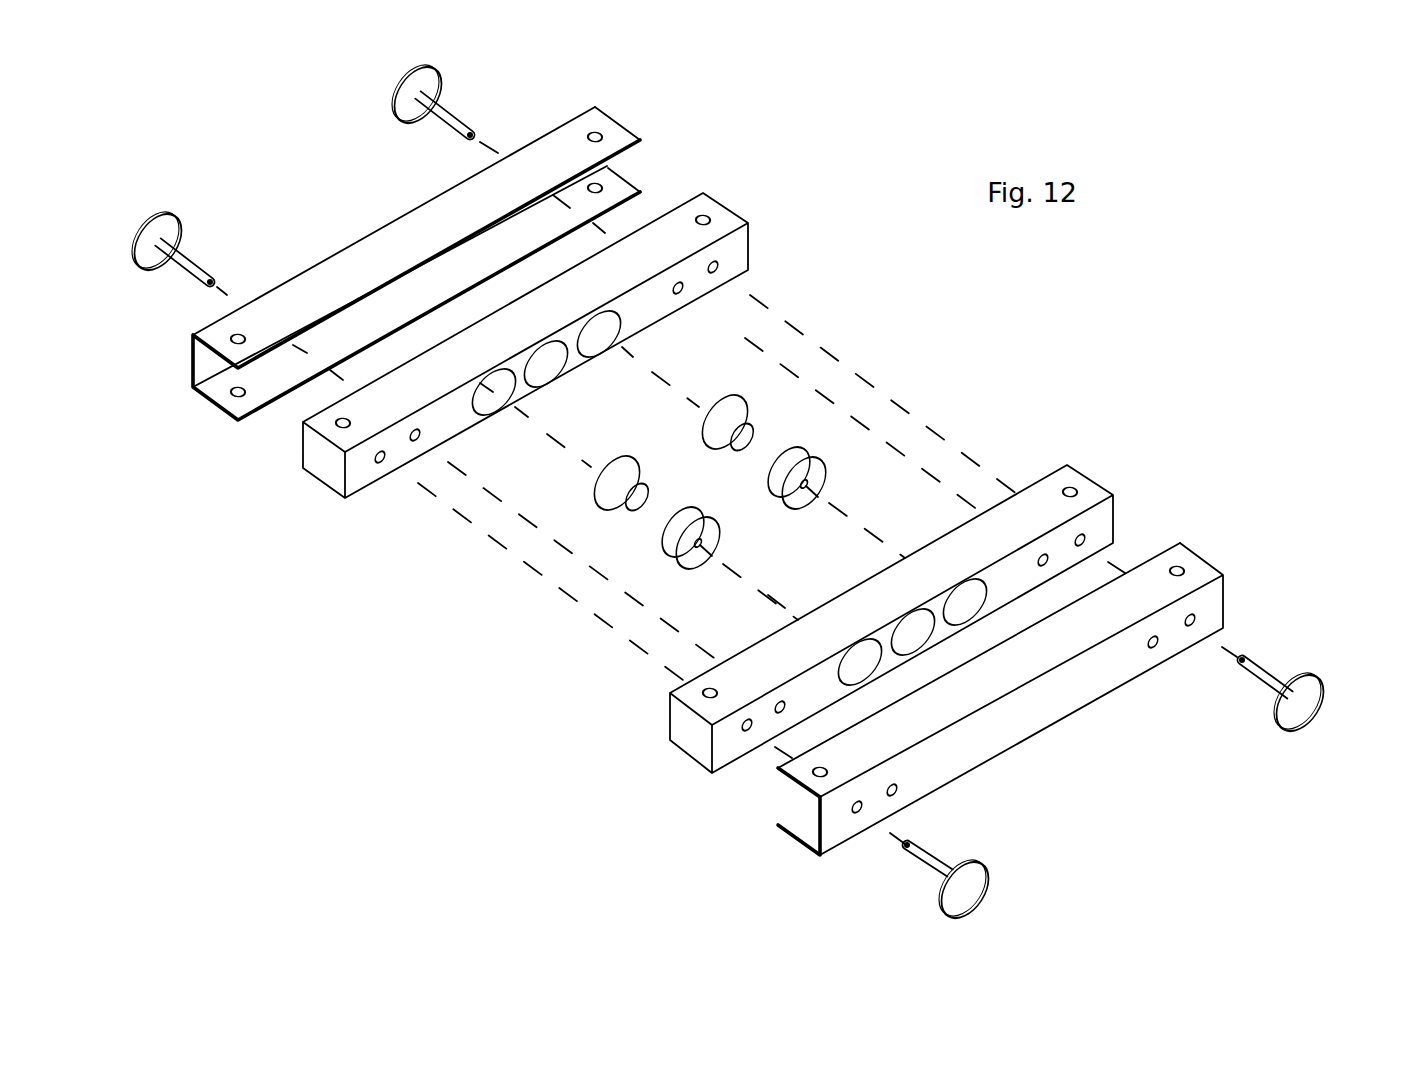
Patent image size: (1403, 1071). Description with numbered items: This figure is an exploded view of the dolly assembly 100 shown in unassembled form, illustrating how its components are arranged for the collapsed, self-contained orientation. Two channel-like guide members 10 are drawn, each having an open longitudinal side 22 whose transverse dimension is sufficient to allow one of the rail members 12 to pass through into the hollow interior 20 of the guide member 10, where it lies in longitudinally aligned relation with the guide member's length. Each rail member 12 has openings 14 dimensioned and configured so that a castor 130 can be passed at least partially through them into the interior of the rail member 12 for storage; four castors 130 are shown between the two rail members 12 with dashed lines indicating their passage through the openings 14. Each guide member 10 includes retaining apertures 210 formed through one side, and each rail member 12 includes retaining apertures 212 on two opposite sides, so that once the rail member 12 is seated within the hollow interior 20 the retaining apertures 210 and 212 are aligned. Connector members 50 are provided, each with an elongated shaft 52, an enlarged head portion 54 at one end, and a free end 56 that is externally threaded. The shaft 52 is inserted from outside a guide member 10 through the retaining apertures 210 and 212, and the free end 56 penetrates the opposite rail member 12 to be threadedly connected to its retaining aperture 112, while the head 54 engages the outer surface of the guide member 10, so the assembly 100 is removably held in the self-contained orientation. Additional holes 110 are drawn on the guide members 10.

The dolly assembly 100 is at (395, 665).
The guide member 10 is at (1217, 569).
The hollow interior 20 is at (357, 315).
The open longitudinal side 22 is at (443, 252).
The rail member 12 is at (738, 212).
The openings 14 is at (582, 357).
The connector member 50 is at (754, 478).
The shaft 52 is at (442, 103).
The head portion 54 is at (410, 73).
The free end 56 is at (472, 130).
The channel holes 110 is at (597, 133).
The retaining aperture 112 is at (337, 426).
The castor 130 is at (687, 515).
The retaining apertures 210 is at (414, 440).
The retaining apertures 212 is at (713, 272).